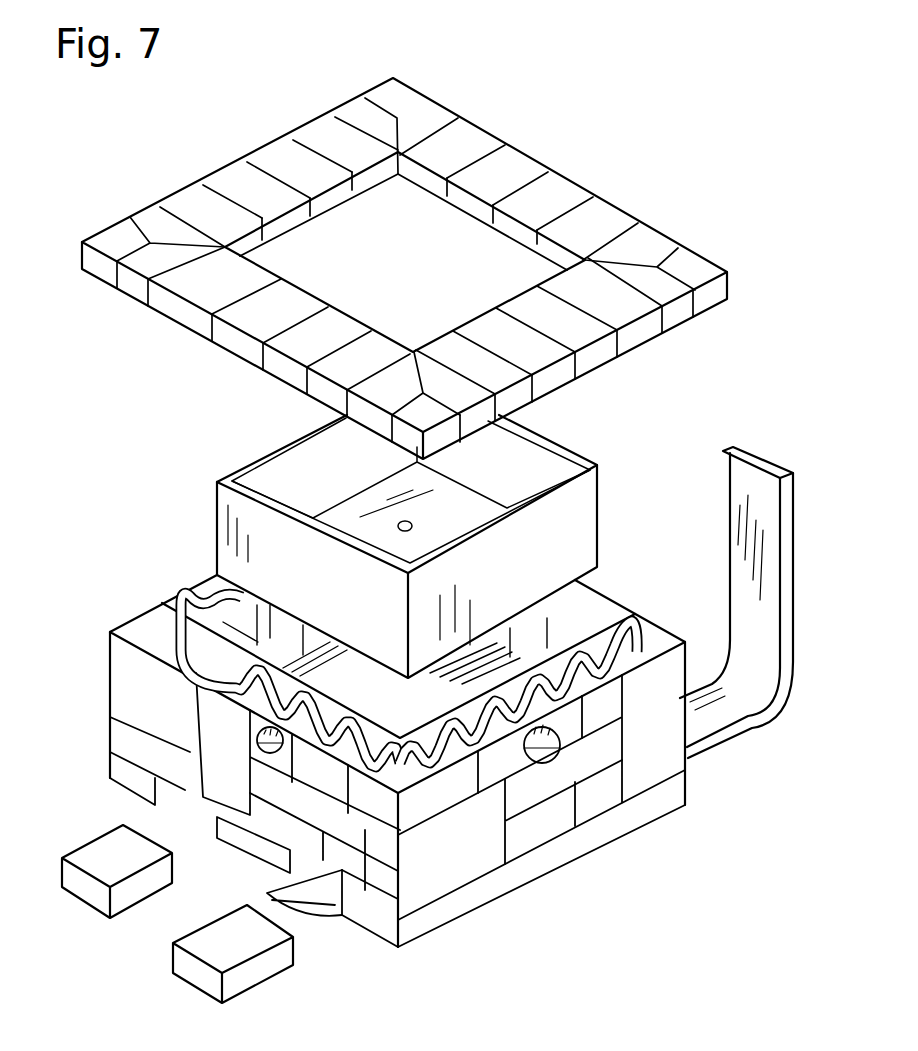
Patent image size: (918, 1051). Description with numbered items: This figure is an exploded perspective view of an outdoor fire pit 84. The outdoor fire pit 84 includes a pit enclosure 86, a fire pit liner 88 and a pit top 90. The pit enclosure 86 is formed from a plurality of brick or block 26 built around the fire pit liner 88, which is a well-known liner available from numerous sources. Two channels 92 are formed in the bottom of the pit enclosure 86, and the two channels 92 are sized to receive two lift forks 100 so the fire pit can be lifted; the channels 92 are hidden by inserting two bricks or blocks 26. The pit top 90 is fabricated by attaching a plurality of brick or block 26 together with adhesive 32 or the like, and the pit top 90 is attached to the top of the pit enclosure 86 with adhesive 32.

The pit top 90 is at (480, 124).
The brick or block 26 is at (566, 190).
The fire pit liner 88 is at (578, 527).
The outdoor fire pit 84 is at (652, 893).
The channel 92 is at (243, 887).
The pit enclosure 86 is at (176, 597).
The adhesive 32 is at (633, 628).
The lift fork 100 is at (712, 712).